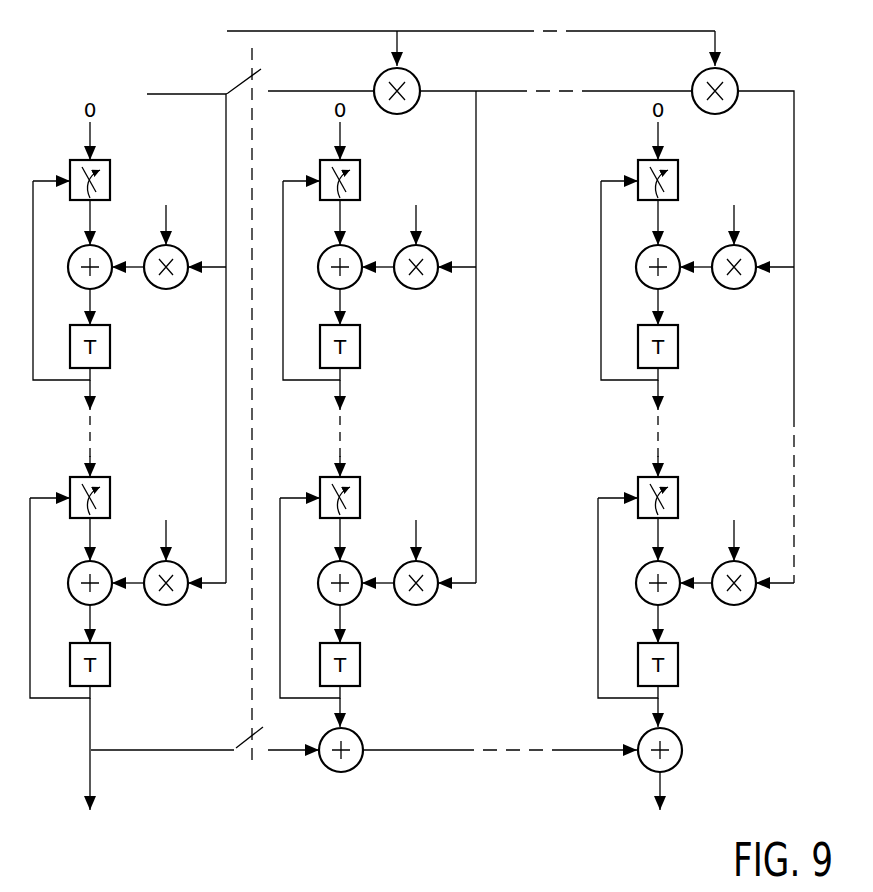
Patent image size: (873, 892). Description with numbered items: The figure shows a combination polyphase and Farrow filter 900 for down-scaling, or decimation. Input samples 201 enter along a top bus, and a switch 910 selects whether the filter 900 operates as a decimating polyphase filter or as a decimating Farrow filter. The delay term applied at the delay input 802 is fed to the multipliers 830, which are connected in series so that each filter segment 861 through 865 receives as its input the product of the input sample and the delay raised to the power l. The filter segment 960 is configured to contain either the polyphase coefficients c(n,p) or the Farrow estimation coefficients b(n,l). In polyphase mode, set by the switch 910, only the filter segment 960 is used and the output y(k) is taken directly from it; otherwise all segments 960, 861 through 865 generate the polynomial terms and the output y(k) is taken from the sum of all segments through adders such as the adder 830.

The delayed data signal d_k-j 802 is at (186, 31).
The input samples 201 is at (130, 80).
The switch 910 is at (266, 79).
The multipliers 830 is at (419, 79).
The combination polyphase and Farrow filter 900 is at (577, 150).
The filter segment 865 is at (580, 238).
The filter segment 861 is at (497, 338).
The filter segment 960 is at (160, 385).